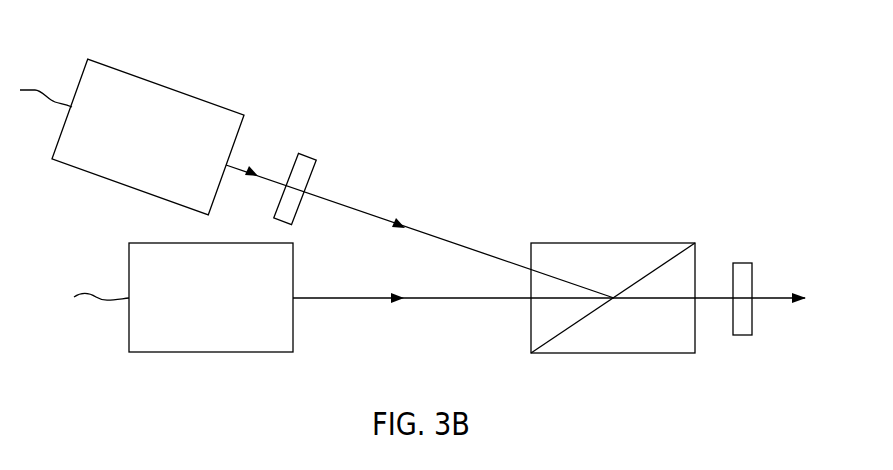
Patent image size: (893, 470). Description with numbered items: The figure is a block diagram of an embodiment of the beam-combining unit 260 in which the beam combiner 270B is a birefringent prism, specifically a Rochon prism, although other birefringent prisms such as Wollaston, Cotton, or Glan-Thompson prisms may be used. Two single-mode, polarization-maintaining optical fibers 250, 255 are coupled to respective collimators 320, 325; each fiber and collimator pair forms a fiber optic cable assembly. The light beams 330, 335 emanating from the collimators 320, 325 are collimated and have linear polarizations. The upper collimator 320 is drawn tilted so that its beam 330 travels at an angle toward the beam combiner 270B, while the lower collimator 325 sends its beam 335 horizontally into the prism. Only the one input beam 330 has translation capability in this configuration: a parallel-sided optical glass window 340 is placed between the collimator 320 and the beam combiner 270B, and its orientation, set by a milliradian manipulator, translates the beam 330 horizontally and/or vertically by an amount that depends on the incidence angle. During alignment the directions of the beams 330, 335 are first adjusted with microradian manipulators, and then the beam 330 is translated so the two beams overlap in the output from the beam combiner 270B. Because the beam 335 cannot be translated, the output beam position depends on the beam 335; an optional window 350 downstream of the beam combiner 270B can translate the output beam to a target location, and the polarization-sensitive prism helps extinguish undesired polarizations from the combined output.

The optical fiber 250 is at (35, 90).
The optical fiber 255 is at (88, 290).
The beam-combining unit 260 is at (604, 44).
The beam combiner 270B is at (658, 243).
The collimator 320 is at (158, 176).
The collimator 325 is at (194, 322).
The light beam 330 is at (242, 165).
The light beam 335 is at (310, 297).
The window 340 is at (281, 226).
The window 350 is at (745, 335).